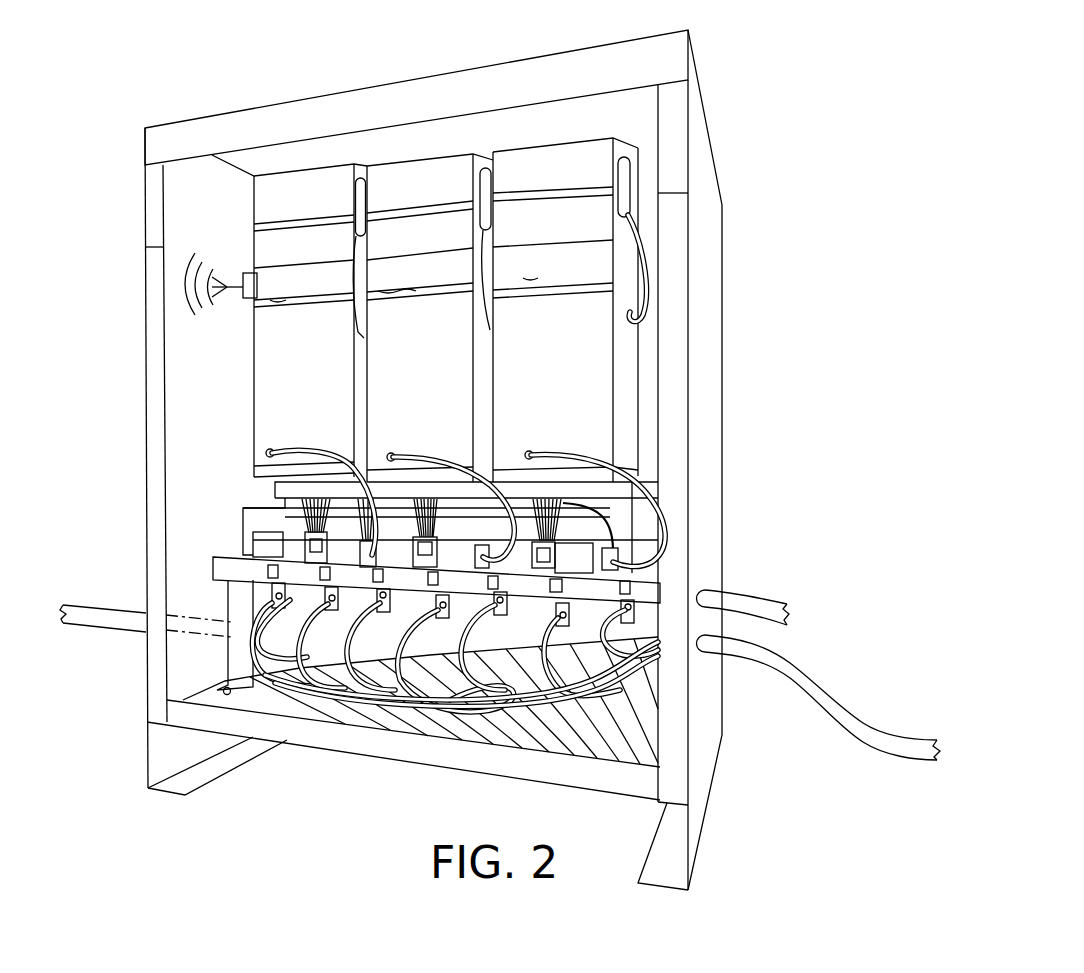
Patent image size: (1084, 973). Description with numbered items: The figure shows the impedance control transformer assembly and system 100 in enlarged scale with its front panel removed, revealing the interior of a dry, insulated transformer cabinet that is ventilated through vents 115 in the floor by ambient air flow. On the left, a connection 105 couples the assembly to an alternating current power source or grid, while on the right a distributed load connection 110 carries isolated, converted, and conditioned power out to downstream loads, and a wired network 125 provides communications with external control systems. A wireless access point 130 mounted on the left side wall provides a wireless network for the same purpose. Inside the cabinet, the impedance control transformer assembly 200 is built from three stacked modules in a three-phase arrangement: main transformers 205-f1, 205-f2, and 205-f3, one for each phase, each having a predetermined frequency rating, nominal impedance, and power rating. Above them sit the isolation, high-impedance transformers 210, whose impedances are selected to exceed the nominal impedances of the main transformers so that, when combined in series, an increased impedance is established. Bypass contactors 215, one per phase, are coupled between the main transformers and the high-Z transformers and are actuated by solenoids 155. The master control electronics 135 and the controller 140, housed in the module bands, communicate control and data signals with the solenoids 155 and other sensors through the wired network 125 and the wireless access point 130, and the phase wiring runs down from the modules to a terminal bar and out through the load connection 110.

The impedance control transformer assembly and system 100 is at (790, 246).
The connection 105 is at (132, 610).
The distributed load connection 110 is at (778, 666).
The vent 115 is at (535, 740).
The wired network 125 is at (763, 597).
The wireless access point 130 is at (245, 275).
The master control electronics 135 is at (469, 283).
The controller 140 is at (614, 273).
The solenoid 155 is at (347, 296).
The impedance control transformer assembly 200 is at (212, 368).
The main transformer 205-f1 is at (340, 370).
The main transformer 205-f2 is at (457, 368).
The main transformer 205-f3 is at (590, 362).
The high-impedance transformer 210 is at (426, 157).
The bypass contactor 215 is at (323, 262).